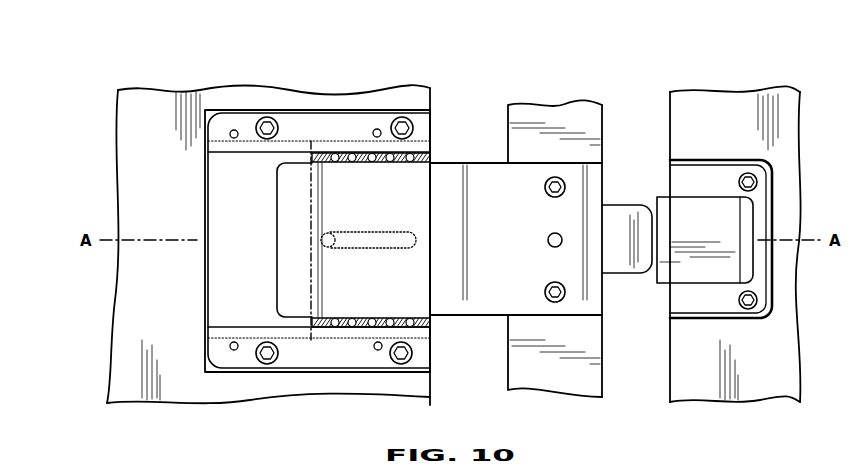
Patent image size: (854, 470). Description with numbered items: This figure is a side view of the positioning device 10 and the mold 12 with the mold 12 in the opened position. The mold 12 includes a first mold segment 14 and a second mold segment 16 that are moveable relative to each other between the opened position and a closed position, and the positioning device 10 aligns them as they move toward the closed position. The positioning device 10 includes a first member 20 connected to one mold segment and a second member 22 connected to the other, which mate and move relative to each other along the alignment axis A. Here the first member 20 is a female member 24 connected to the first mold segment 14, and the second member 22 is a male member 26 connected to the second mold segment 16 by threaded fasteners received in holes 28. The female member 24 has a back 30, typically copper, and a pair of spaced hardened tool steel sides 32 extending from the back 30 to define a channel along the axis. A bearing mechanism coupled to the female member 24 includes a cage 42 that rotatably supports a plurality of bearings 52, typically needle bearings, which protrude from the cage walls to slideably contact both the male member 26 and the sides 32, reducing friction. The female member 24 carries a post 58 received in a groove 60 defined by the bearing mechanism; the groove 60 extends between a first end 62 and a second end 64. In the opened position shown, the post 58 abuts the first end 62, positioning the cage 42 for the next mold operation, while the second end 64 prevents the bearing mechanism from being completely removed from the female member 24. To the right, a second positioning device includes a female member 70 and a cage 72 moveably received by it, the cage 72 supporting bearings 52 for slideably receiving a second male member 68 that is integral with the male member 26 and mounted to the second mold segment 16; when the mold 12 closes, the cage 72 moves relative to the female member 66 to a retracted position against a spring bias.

The positioning device 10 is at (483, 104).
The mold 12 is at (297, 393).
The first mold segment 14 is at (150, 100).
The second mold segment 16 is at (565, 103).
The first member 20 is at (367, 104).
The second member 22 is at (483, 302).
The female member 24 is at (291, 104).
The male member 26 is at (516, 240).
The holes 28 is at (566, 187).
The back 30 is at (241, 266).
The sides 32 is at (334, 134).
The cage 42 is at (432, 195).
The bearings 52 is at (335, 163).
The post 58 is at (330, 233).
The groove 60 is at (375, 249).
The first end 62 is at (321, 240).
The second end 64 is at (416, 240).
The female member 66 is at (700, 158).
The second male member 68 is at (614, 203).
The female member 70 is at (762, 256).
The cage 72 is at (725, 222).